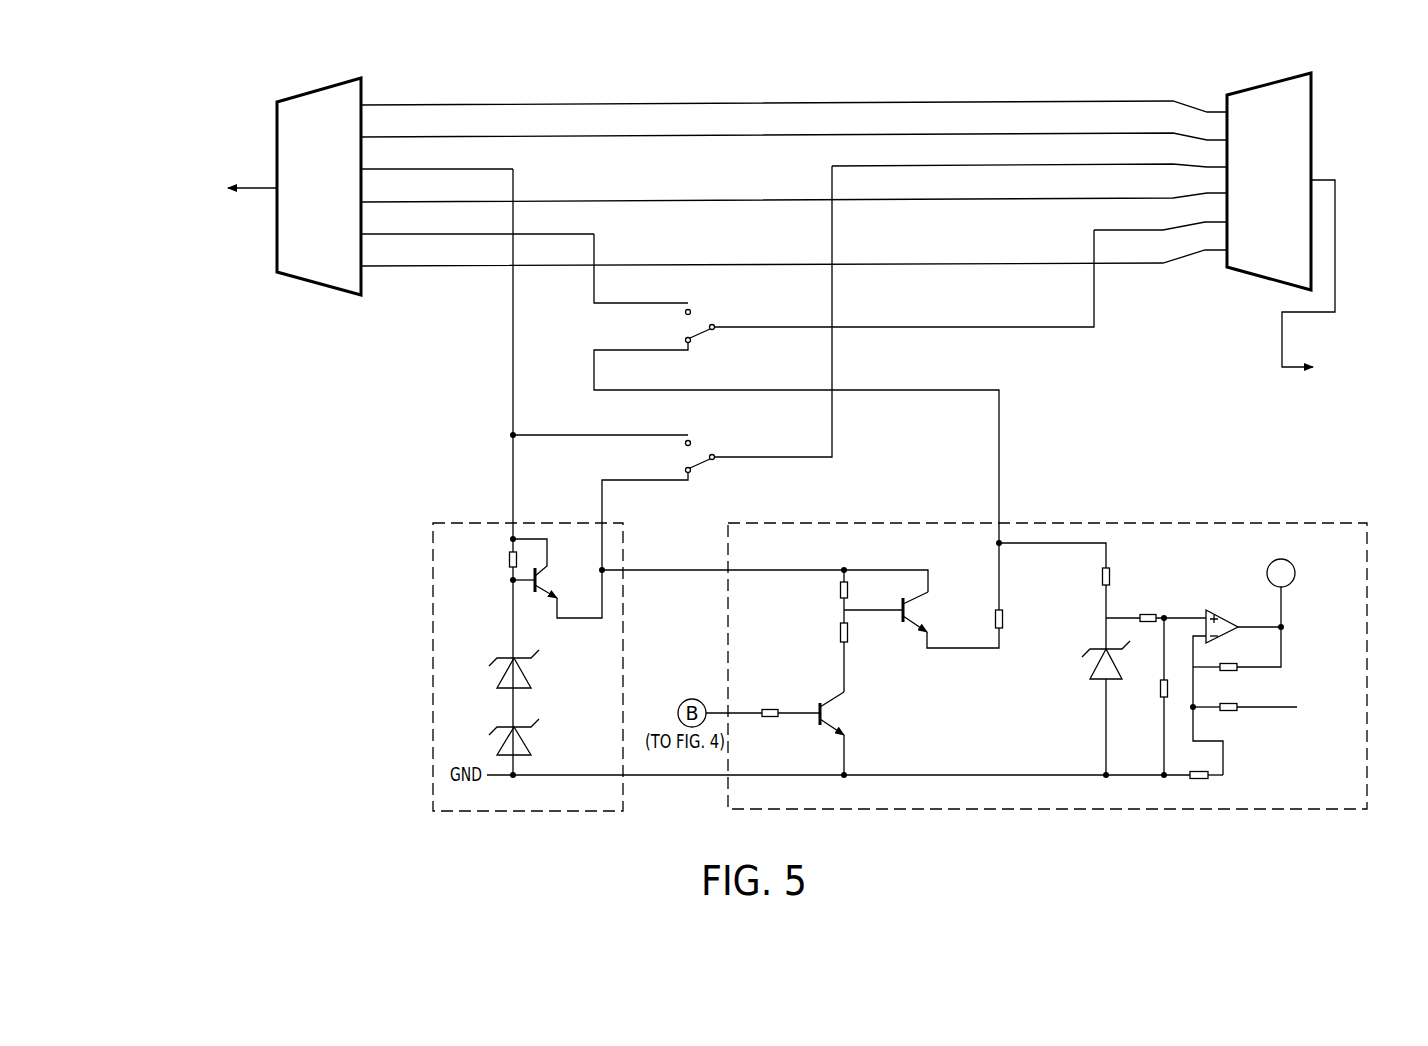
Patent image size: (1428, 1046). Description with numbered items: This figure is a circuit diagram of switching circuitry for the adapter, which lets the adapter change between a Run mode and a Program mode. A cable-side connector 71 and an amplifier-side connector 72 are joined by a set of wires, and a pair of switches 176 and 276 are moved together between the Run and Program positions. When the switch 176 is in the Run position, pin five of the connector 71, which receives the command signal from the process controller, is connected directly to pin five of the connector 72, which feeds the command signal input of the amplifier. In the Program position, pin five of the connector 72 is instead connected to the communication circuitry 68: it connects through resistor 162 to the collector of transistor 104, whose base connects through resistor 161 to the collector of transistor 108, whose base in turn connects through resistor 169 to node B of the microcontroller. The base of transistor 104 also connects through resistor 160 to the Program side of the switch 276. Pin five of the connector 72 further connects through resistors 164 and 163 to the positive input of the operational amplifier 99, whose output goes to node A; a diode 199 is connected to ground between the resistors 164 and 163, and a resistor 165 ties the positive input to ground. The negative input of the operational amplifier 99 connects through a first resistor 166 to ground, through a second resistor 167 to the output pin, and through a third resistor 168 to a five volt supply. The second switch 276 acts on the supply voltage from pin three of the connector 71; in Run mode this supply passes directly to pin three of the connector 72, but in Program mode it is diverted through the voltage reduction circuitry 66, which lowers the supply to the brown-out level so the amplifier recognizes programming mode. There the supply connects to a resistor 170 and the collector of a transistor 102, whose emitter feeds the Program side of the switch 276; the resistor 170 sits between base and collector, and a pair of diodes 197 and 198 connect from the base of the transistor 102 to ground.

The connector 71 is at (318, 90).
The connector 72 is at (1265, 88).
The switch 176 is at (700, 331).
The second switch 276 is at (702, 461).
The voltage reduction circuitry 66 is at (453, 523).
The communication circuitry 68 is at (1117, 523).
The resistor 170 is at (509, 560).
The transistor 102 is at (550, 577).
The diode 197 is at (536, 672).
The diode 198 is at (536, 740).
The resistor 160 is at (837, 591).
The resistor 161 is at (837, 632).
The transistor 108 is at (830, 713).
The resistor 169 is at (772, 718).
The transistor 104 is at (913, 609).
The resistor 162 is at (1004, 619).
The resistor 164 is at (1111, 572).
The resistor 163 is at (1146, 614).
The resistor 165 is at (1158, 684).
The diode 199 is at (1087, 675).
The operational amplifier 99 is at (1219, 611).
The second resistor 167 is at (1226, 672).
The third resistor 168 is at (1226, 712).
The first resistor 166 is at (1196, 780).